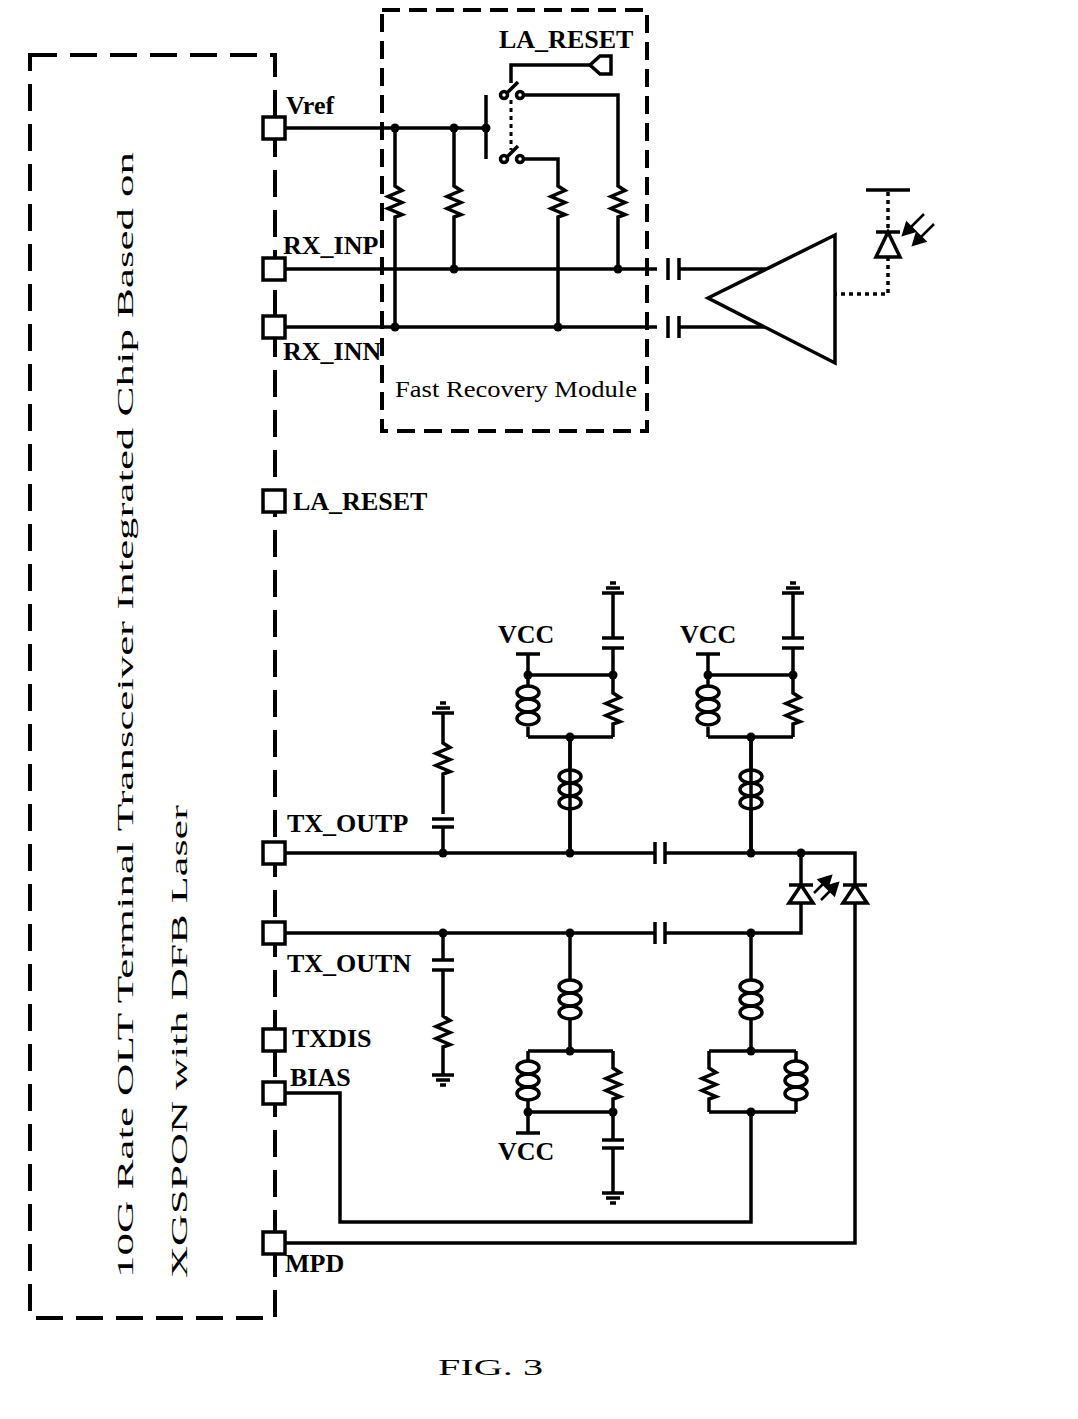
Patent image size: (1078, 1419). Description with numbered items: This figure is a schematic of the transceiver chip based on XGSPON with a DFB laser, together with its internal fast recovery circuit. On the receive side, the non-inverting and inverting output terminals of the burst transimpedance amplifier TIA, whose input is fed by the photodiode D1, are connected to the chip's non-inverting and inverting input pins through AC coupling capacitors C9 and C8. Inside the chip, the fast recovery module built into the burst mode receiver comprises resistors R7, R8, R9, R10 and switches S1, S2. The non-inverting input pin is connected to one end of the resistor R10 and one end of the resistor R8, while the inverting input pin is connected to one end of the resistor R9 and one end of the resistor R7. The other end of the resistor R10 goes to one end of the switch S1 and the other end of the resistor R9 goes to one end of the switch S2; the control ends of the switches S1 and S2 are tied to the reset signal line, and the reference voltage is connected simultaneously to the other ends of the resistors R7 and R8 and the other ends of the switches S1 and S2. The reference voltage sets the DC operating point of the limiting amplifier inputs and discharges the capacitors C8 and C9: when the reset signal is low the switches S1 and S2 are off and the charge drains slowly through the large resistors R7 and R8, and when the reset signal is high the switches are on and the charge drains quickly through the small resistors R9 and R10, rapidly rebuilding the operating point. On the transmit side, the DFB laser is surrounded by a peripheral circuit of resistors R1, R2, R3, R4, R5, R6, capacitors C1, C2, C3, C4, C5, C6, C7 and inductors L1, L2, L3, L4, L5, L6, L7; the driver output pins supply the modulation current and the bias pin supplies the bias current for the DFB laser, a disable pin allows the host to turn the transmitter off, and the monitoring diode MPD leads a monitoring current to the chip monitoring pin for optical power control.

The resistor R1 is at (462, 758).
The resistor R2 is at (462, 1049).
The resistor R3 is at (634, 1081).
The resistor R4 is at (634, 706).
The resistor R5 is at (814, 706).
The resistor R6 is at (689, 1081).
The resistor R7 is at (413, 227).
The resistor R8 is at (472, 198).
The resistor R9 is at (543, 255).
The resistor R10 is at (597, 226).
The capacitor C1 is at (462, 831).
The capacitor C2 is at (462, 973).
The capacitor C3 is at (632, 1157).
The capacitor C4 is at (632, 629).
The capacitor C5 is at (661, 838).
The capacitor C6 is at (661, 947).
The capacitor C7 is at (812, 629).
The AC coupling capacitor C8 is at (674, 343).
The AC coupling capacitor C9 is at (674, 254).
The inductor L1 is at (588, 992).
The inductor L2 is at (550, 919).
The inductor L3 is at (511, 705).
The inductor L4 is at (690, 705).
The inductor L5 is at (734, 795).
The inductor L6 is at (734, 992).
The inductor L7 is at (813, 1081).
The switch S1 is at (560, 132).
The switch S2 is at (530, 158).
The photodiode D1 is at (884, 242).
The burst transimpedance amplifier TIA is at (771, 299).
The DFB laser DFB is at (746, 880).
The monitoring diode MPD is at (881, 895).